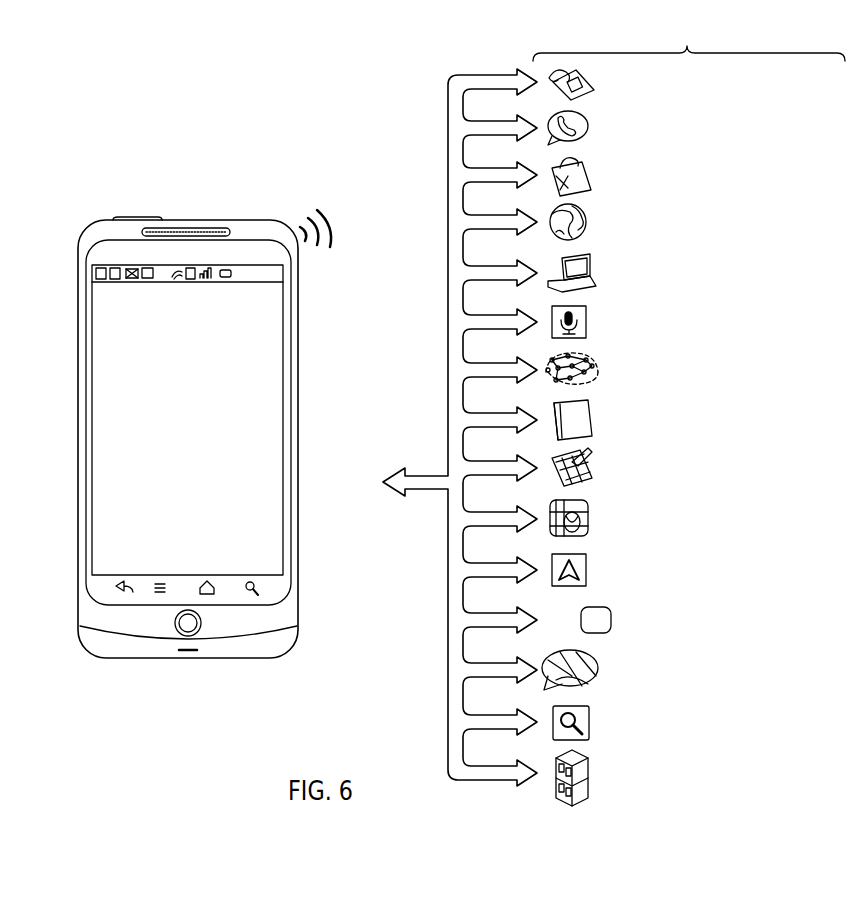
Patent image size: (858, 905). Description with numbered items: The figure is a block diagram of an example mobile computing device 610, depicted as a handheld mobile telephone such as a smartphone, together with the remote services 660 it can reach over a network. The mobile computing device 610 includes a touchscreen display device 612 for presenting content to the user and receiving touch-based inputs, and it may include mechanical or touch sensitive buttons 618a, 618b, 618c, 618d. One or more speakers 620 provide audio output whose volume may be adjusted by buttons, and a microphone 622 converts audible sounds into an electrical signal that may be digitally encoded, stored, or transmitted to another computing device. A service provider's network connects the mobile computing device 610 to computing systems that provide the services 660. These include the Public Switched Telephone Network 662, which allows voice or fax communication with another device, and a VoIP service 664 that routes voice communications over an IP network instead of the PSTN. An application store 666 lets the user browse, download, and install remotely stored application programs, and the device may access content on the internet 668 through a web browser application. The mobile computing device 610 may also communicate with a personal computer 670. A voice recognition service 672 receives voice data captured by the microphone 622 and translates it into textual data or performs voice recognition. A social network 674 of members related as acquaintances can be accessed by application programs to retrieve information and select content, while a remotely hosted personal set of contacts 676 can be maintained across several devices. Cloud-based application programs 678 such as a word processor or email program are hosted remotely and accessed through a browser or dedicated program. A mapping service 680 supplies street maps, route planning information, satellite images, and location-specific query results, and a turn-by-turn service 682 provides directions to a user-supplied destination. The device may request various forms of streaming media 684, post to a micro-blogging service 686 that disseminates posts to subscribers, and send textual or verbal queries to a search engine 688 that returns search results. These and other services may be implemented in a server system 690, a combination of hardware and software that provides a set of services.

The mobile computing device 610 is at (243, 160).
The touchscreen display device 612 is at (298, 421).
The button 618a is at (124, 580).
The button 618b is at (161, 580).
The button 618c is at (207, 580).
The button 618d is at (251, 580).
The speaker 620 is at (195, 231).
The microphone 622 is at (186, 655).
The services 660 is at (689, 44).
The Public Switched Telephone Network (PSTN) 662 is at (589, 85).
The Voice over Internet Protocol (VoIP) service 664 is at (589, 130).
The application store 666 is at (590, 176).
The internet 668 is at (588, 225).
The personal computer 670 is at (592, 268).
The voice recognition service 672 is at (588, 322).
The social network 674 is at (600, 360).
The contacts 676 is at (592, 422).
The cloud-based application programs 678 is at (592, 470).
The mapping service 680 is at (590, 514).
The turn-by-turn service 682 is at (588, 572).
The streaming media 684 is at (612, 621).
The micro-blogging service 686 is at (598, 672).
The search engine 688 is at (590, 724).
The server system 690 is at (590, 774).